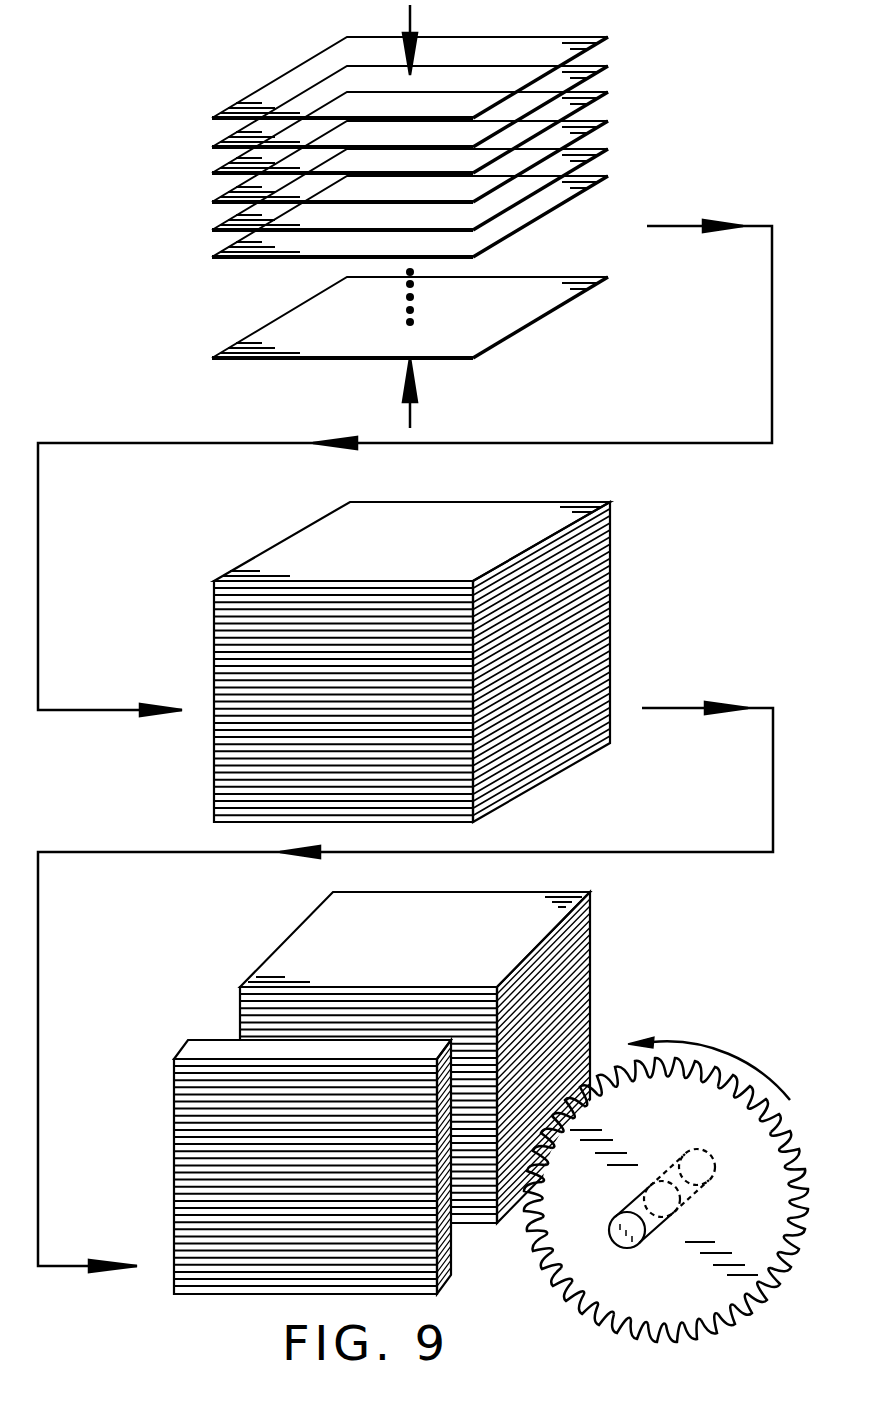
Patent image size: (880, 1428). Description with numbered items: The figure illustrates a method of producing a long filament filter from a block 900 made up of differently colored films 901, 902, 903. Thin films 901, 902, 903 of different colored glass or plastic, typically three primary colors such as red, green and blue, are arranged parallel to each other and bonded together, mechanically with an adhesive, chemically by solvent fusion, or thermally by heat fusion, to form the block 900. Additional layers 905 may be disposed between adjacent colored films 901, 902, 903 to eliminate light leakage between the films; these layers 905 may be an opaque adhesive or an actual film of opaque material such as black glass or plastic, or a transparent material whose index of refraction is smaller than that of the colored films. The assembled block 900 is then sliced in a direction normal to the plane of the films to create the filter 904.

The block 900 is at (198, 625).
The colored film 901 is at (227, 110).
The colored film 902 is at (227, 167).
The colored film 903 is at (237, 218).
The filter 904 is at (160, 1054).
The additional layer 905 is at (227, 140).